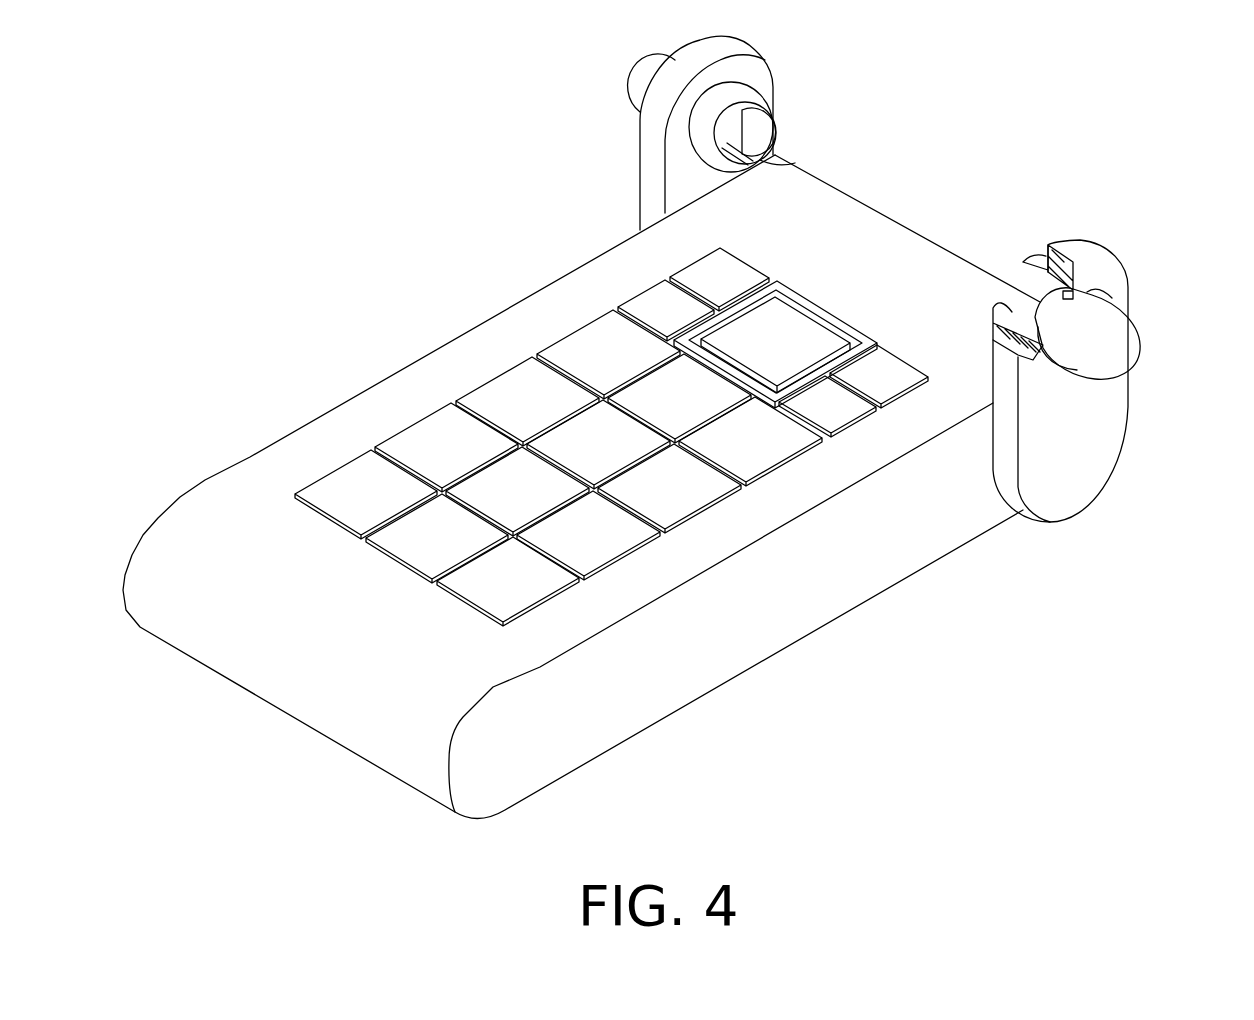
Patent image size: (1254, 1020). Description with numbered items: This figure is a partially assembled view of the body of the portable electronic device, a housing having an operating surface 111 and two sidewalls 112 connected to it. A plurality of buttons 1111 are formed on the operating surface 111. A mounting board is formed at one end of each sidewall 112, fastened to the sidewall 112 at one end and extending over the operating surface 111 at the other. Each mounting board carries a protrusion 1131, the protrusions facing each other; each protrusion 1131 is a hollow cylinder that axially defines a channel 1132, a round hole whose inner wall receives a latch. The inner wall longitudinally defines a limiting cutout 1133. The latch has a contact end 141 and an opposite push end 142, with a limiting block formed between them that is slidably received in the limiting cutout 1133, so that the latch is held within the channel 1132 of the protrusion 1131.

The operating surface 111 is at (556, 437).
The buttons 1111 is at (362, 497).
The sidewall 112 is at (833, 555).
The protrusion 1131 is at (725, 102).
The channel 1132 is at (755, 125).
The limiting cutout 1133 is at (764, 132).
The contact end 141 is at (1100, 355).
The push end 142 is at (1053, 308).